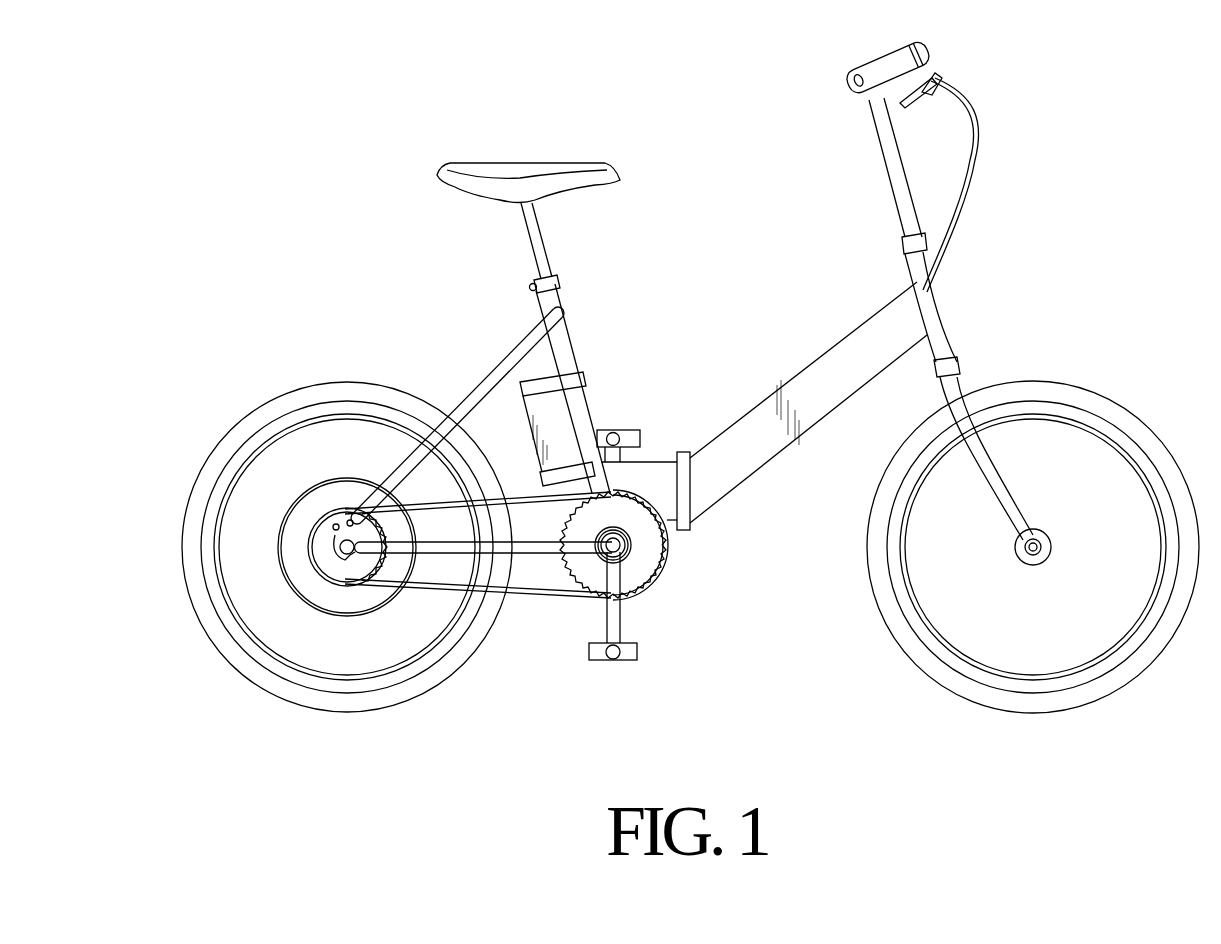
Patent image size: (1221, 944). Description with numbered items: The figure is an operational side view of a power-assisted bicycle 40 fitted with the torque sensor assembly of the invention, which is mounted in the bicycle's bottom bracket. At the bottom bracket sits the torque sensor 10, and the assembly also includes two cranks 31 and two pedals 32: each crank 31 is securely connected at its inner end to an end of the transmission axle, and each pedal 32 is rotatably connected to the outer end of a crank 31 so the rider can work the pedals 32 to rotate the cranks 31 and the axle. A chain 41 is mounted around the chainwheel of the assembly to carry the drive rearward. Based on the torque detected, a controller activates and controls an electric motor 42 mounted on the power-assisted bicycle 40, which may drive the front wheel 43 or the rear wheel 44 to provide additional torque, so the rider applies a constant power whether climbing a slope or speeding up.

The torque sensor 10 is at (632, 561).
The crank 31 is at (615, 617).
The pedal 32 is at (628, 657).
The power-assisted bicycle 40 is at (404, 247).
The chain 41 is at (568, 596).
The electric motor 42 is at (305, 502).
The front wheel 43 is at (1102, 408).
The rear wheel 44 is at (218, 630).